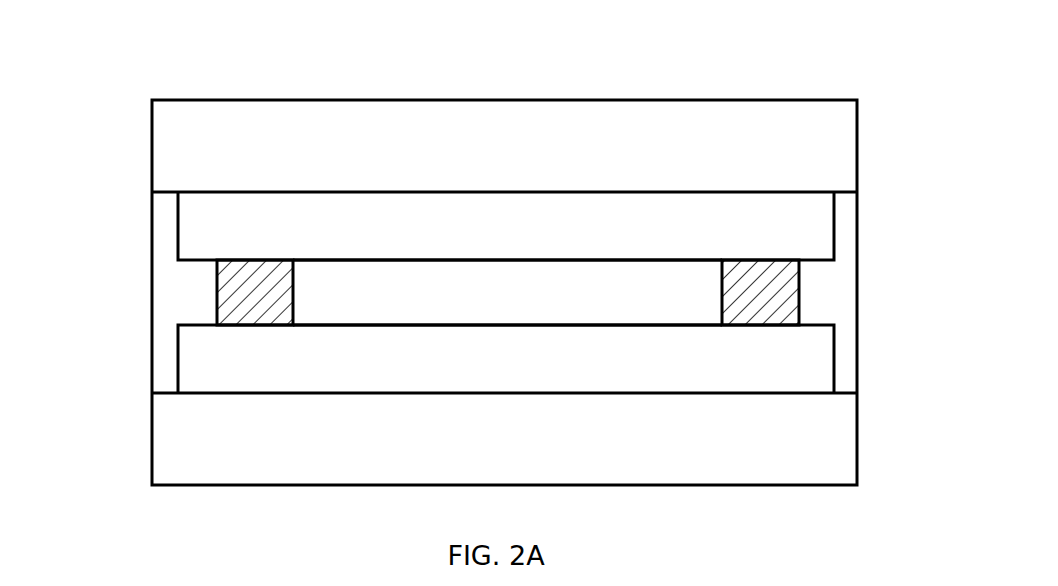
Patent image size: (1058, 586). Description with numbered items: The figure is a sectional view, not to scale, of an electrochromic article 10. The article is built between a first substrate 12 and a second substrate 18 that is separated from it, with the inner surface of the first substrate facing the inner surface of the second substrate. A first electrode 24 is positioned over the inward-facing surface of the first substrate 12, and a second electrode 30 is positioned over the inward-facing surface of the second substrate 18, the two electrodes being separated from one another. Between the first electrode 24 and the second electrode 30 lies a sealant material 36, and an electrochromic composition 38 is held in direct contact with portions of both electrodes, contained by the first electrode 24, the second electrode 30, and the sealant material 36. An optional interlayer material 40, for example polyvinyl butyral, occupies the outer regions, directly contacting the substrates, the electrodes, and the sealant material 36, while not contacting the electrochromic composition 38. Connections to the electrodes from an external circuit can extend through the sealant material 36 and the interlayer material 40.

The electrochromic article 10 is at (98, 68).
The first substrate 12 is at (504, 164).
The first electrode 24 is at (506, 226).
The electrochromic composition 38 is at (507, 292).
The second electrode 30 is at (506, 359).
The second substrate 18 is at (504, 420).
The sealant material 36 is at (233, 303).
The interlayer material 40 is at (178, 287).